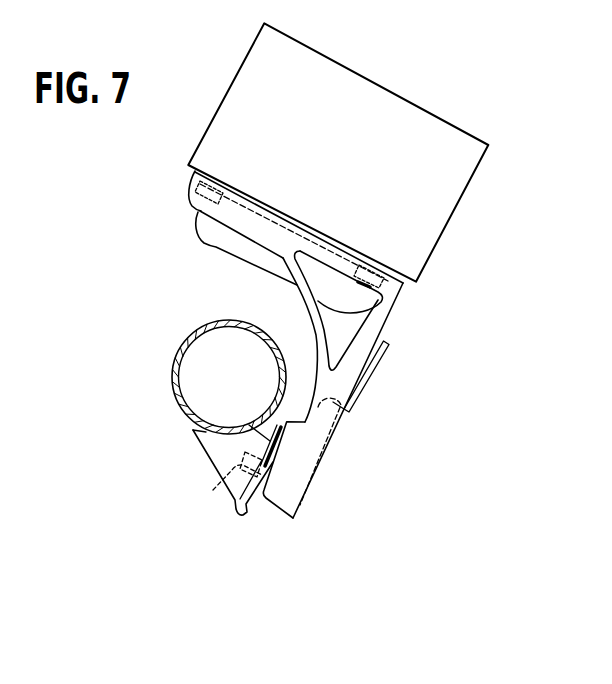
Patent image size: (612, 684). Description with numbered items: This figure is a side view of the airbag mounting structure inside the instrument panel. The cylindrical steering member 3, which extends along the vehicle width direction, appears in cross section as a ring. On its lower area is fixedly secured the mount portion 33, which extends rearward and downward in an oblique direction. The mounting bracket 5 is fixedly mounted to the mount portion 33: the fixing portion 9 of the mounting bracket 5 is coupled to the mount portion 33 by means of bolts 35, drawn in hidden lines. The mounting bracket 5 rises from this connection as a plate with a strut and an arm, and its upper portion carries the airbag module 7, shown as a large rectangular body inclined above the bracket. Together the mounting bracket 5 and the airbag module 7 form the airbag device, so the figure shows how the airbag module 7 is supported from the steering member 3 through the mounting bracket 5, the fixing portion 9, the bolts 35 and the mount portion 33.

The airbag module 7 is at (373, 110).
The mounting bracket 5 is at (384, 326).
The steering member 3 is at (197, 328).
The fixing portion 9 is at (271, 431).
The mount portion 33 is at (210, 442).
The bolts 35 is at (213, 490).